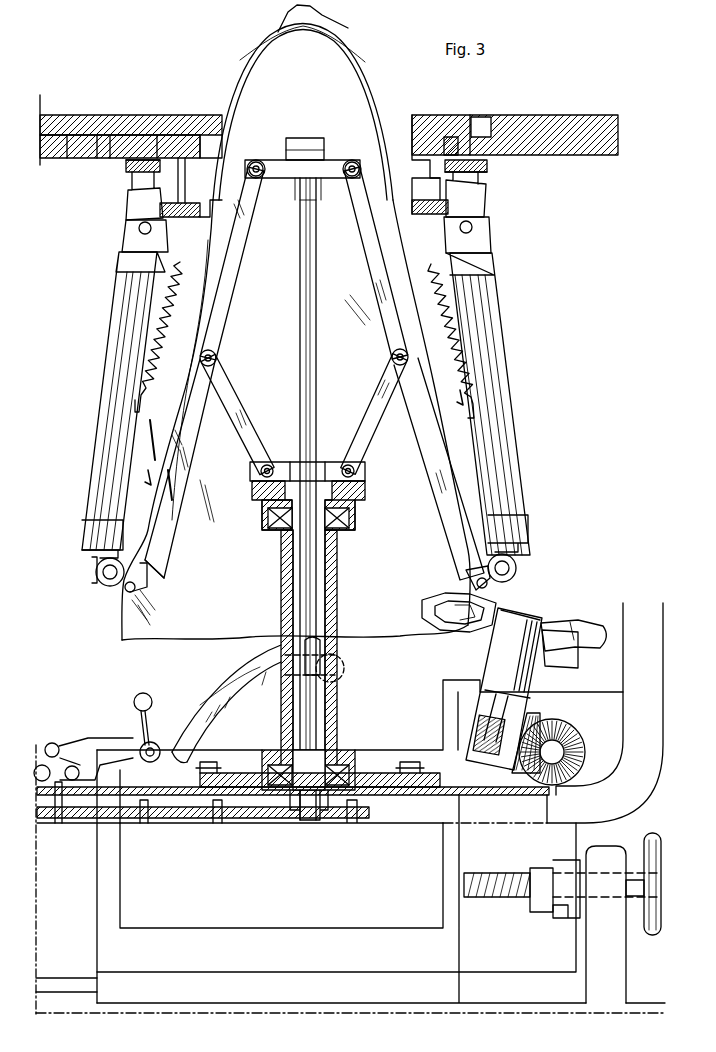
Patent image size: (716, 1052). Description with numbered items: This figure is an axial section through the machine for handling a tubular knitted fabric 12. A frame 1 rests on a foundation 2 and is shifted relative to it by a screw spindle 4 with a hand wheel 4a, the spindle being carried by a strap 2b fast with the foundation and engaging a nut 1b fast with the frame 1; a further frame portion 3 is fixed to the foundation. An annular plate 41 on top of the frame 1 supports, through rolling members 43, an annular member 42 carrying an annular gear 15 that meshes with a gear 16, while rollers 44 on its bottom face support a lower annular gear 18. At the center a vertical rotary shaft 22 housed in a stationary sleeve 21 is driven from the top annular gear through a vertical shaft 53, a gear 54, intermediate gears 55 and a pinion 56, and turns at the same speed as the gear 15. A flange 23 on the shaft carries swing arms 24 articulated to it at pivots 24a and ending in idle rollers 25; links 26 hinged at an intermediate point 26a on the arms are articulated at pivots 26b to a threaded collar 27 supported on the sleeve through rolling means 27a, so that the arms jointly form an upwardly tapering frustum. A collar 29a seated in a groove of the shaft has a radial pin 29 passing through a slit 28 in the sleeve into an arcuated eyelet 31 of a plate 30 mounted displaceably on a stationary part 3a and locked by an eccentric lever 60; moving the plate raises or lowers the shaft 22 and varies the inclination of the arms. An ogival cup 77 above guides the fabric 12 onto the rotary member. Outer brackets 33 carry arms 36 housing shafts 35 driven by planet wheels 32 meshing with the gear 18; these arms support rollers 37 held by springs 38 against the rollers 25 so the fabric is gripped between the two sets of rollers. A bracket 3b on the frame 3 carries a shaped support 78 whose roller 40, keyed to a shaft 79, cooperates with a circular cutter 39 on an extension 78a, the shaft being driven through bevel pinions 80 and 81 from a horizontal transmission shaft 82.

The frame 1 is at (628, 603).
The nut 1b is at (535, 868).
The foundation 2 is at (626, 1000).
The strap 2b is at (610, 938).
The frame portion 3 is at (455, 936).
The stationary part 3a is at (380, 748).
The bracket 3b is at (540, 720).
The screw spindle 4 is at (502, 897).
The hand wheel 4a is at (646, 850).
The tubular knitted fabric 12 is at (335, 22).
The annular gear 15 is at (452, 140).
The gear 16 is at (68, 160).
The annular gear 18 is at (430, 150).
The stationary sleeve 21 is at (333, 575).
The rotary shaft 22 is at (312, 250).
The flange 23 is at (322, 158).
The swing arms 24 is at (243, 270).
The articulation point 24a is at (256, 160).
The idle rollers 25 is at (128, 592).
The links 26 is at (248, 415).
The intermediate point 26a is at (216, 356).
The articulation point 26b is at (261, 472).
The rotary threaded collar 27 is at (270, 500).
The rolling means 27a is at (352, 515).
The slit 28 is at (340, 695).
The radial pin 29 is at (342, 660).
The collar 29a is at (290, 658).
The arcuated plate 30 is at (205, 700).
The eyelet 31 is at (232, 690).
The planet wheels 32 is at (138, 160).
The brackets 33 is at (128, 205).
The shafts 35 is at (135, 243).
The arms 36 is at (120, 388).
The rollers 37 is at (100, 582).
The spring 38 is at (162, 318).
The circular cutter 39 is at (428, 612).
The roller 40 is at (540, 625).
The annular plate 41 is at (555, 125).
The annular member 42 is at (478, 125).
The rolling members 43 is at (425, 215).
The rollers 44 is at (182, 160).
The vertical shaft 53 is at (58, 745).
The gear 54 is at (74, 823).
The intermediate gears 55 is at (192, 824).
The pinion 56 is at (355, 824).
The eccentric lever 60 is at (138, 718).
The ogival cup 77 is at (304, 28).
The shaped support 78 is at (498, 668).
The extension 78a is at (432, 598).
The shaft 79 is at (480, 695).
The bevel pinions 80 is at (497, 795).
The bevel pinions 81 is at (565, 722).
The horizontal transmission shaft 82 is at (563, 752).